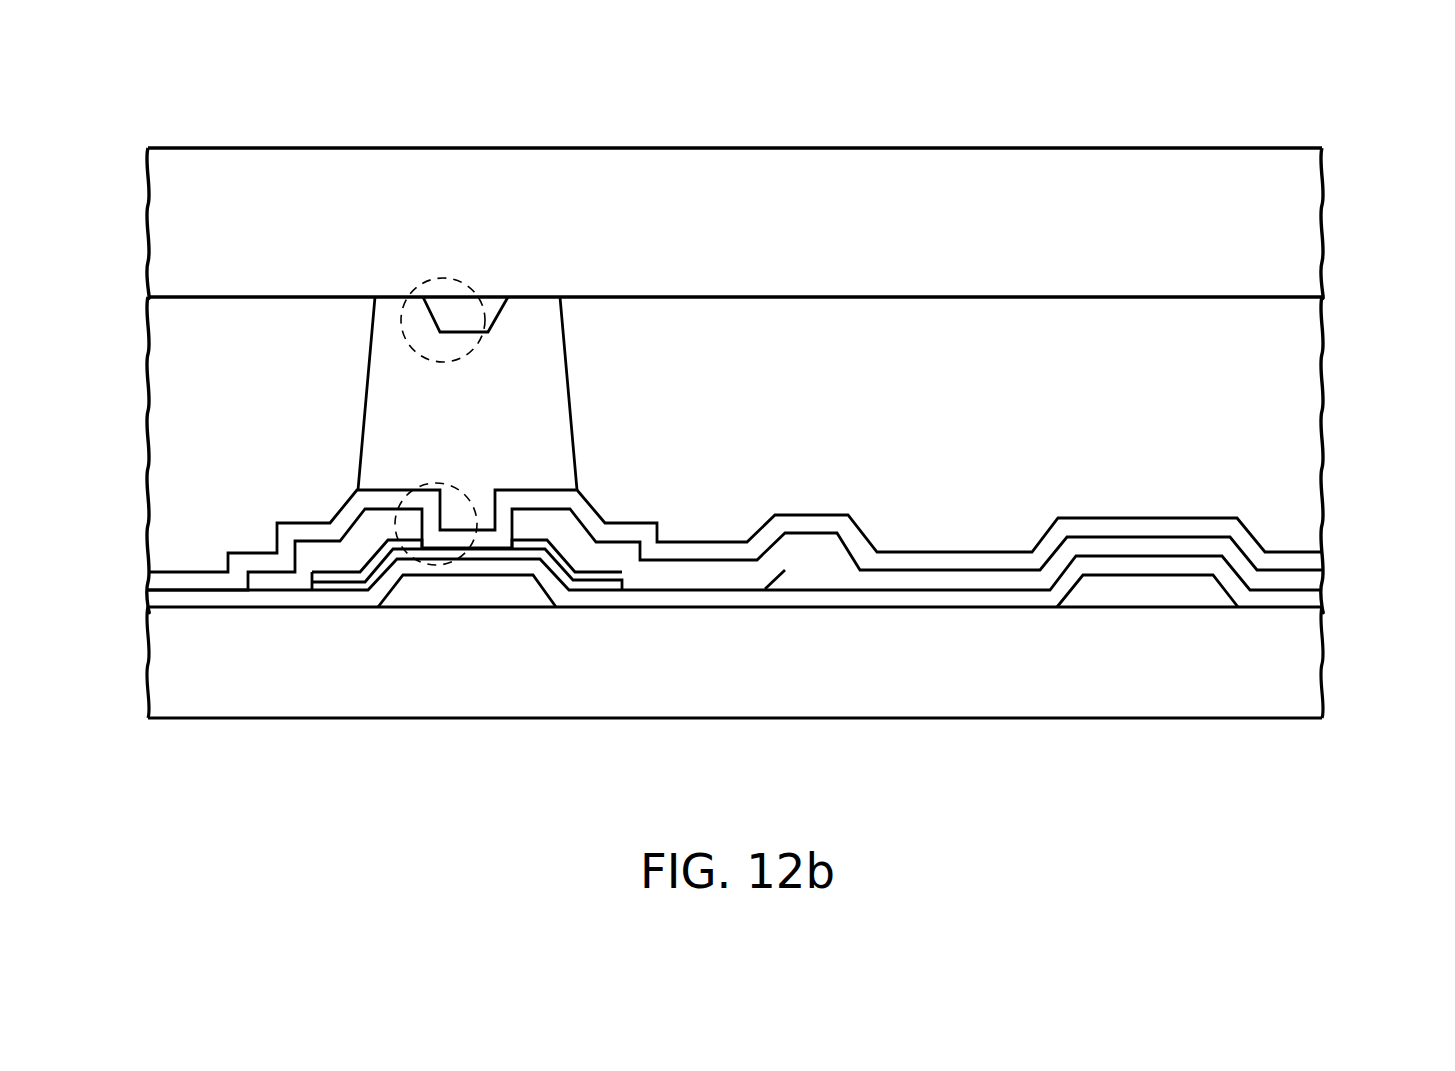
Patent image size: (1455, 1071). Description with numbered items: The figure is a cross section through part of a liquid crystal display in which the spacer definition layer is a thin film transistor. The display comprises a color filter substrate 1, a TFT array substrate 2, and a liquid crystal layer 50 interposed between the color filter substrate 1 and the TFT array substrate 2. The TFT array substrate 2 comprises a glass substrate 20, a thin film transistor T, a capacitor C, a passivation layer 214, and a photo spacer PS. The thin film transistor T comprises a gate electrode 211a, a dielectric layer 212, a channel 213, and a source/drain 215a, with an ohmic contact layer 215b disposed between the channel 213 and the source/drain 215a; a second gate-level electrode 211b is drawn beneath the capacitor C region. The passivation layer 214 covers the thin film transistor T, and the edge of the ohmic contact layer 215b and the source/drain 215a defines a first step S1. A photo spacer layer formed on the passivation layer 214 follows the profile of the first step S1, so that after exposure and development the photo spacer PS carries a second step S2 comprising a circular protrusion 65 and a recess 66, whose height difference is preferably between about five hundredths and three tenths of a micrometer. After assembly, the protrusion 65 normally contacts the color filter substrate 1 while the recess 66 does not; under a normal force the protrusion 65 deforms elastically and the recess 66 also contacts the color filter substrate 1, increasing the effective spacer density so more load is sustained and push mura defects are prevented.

The color filter substrate 1 is at (1408, 147).
The TFT array substrate 2 is at (1408, 518).
The glass substrate 20 is at (1295, 688).
The liquid crystal layer 50 is at (1295, 422).
The protrusion 65 is at (529, 300).
The recess 66 is at (490, 332).
The gate electrode 211a is at (478, 590).
The common electrode line 211b is at (1190, 583).
The dielectric layer 212 is at (220, 598).
The channel 213 is at (607, 583).
The passivation layer 214 is at (178, 578).
The source/drain 215a is at (610, 553).
The ohmic contact layer 215b is at (587, 573).
The photo spacer PS is at (393, 397).
The thin film transistor T is at (403, 625).
The capacitor C is at (1147, 628).
The first step S1 is at (439, 578).
The second step S2 is at (442, 268).